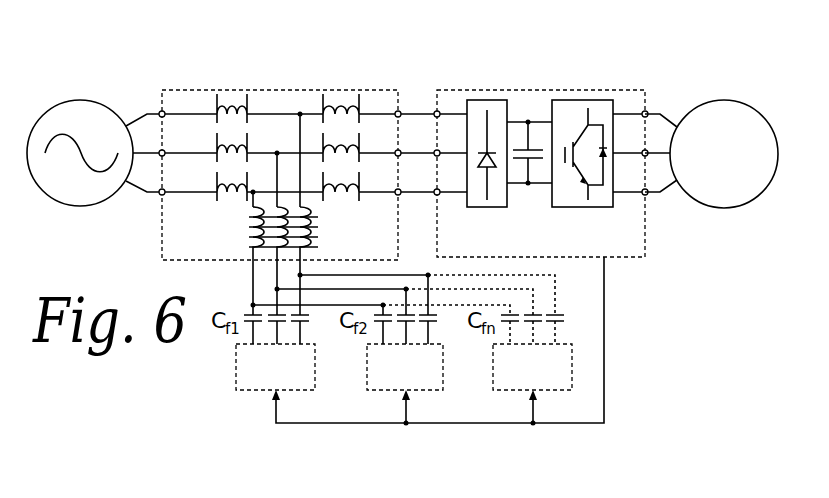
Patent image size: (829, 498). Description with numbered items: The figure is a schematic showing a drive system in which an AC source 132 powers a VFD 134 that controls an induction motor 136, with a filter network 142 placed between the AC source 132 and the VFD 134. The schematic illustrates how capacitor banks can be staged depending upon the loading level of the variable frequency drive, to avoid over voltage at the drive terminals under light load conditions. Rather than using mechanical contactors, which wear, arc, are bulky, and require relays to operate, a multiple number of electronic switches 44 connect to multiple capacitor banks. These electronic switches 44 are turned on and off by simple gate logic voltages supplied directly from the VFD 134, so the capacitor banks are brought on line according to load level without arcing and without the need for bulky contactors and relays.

The AC source 132 is at (93, 99).
The VFD 134 is at (581, 86).
The induction motor 136 is at (740, 100).
The filter inductor network 142 is at (156, 229).
The electronic switches 44 is at (367, 389).